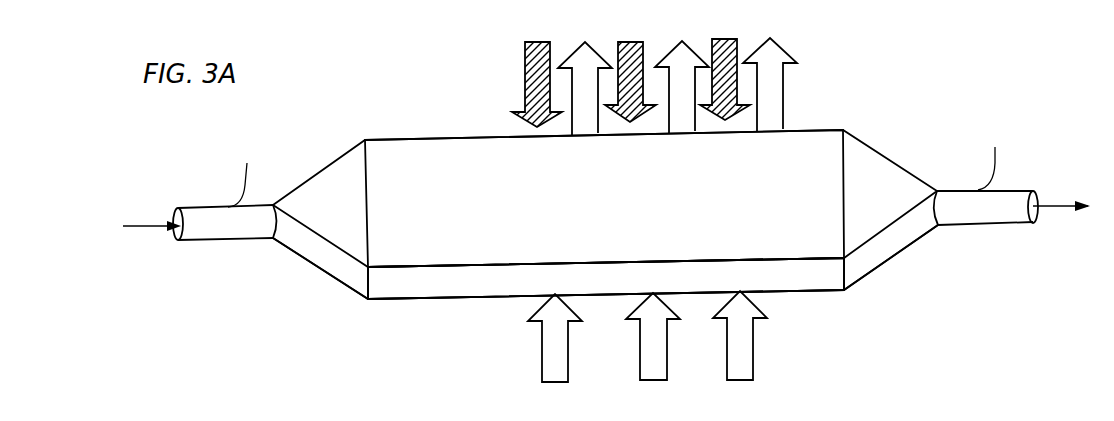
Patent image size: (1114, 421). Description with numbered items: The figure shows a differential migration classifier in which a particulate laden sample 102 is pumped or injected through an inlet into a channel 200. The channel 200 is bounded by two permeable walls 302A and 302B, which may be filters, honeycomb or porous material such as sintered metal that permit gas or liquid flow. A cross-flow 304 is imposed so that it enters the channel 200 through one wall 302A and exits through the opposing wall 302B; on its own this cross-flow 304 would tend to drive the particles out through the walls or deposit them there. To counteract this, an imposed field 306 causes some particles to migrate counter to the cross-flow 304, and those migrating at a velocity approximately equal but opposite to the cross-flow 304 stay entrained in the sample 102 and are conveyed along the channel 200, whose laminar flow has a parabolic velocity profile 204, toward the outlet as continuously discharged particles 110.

The channel 200 is at (372, 120).
The permeable wall 302B is at (398, 172).
The permeable wall 302A is at (412, 300).
The parabolic velocity profile 204 is at (482, 273).
The particulate laden sample 102 is at (143, 226).
The discharged particles 110 is at (1052, 206).
The cross-flow 304 is at (781, 50).
The imposed field 306 is at (735, 40).